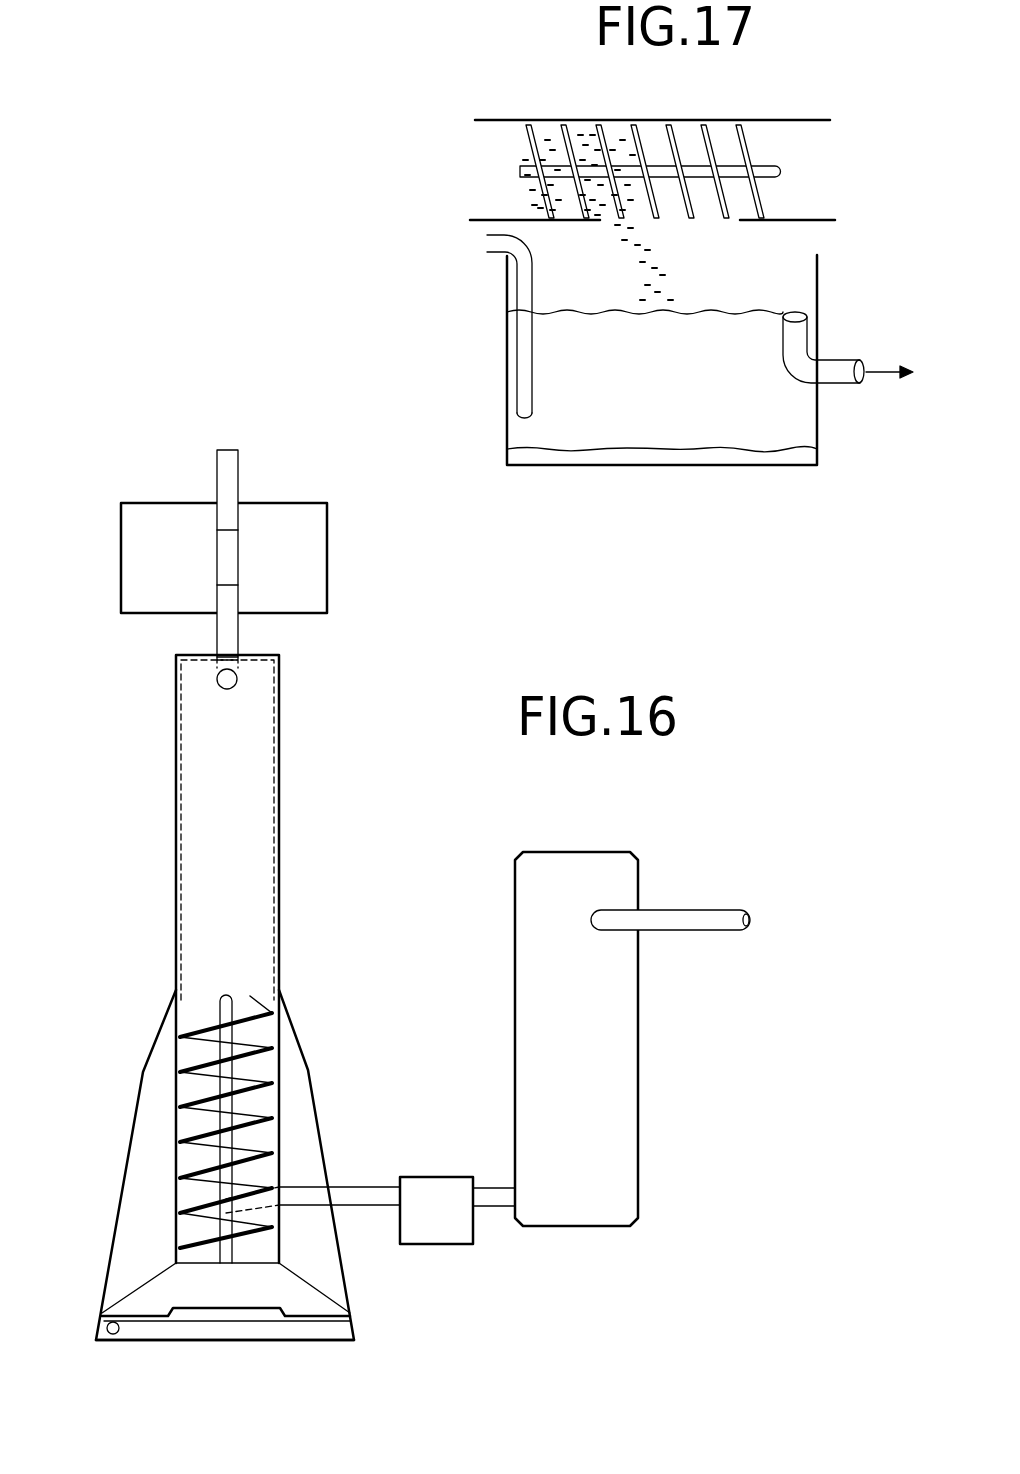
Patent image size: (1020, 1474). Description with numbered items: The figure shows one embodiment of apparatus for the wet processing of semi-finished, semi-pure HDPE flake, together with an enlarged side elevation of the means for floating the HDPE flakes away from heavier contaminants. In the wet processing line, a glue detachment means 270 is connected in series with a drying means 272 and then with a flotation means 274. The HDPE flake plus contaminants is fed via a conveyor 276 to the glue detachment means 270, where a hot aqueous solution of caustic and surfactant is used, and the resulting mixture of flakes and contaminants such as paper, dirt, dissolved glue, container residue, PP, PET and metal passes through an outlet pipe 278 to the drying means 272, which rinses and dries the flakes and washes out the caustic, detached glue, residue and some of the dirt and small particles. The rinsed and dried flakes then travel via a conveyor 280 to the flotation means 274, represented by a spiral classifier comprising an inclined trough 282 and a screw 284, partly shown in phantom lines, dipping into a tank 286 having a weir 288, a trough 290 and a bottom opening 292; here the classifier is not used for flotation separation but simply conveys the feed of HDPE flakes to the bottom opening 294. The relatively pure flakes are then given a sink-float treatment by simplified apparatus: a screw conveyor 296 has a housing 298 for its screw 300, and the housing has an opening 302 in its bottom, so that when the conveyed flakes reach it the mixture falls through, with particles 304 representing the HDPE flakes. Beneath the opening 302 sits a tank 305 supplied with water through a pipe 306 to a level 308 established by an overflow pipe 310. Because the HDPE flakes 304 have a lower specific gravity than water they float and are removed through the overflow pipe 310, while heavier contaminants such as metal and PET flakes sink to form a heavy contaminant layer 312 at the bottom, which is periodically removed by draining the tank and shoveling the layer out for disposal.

In FIG. 16, the glue detachment means 270 is at (640, 1088).
In FIG. 16, the drying means 272 is at (432, 1245).
In FIG. 16, the flotation means 274 is at (340, 750).
In FIG. 16, the conveyor 276 is at (670, 910).
In FIG. 16, the outlet pipe 278 is at (497, 1183).
In FIG. 16, the conveyor 280 is at (352, 1185).
In FIG. 16, the inclined trough 282 is at (280, 870).
In FIG. 16, the screw 284 is at (255, 1015).
In FIG. 16, the tank 286 is at (355, 1288).
In FIG. 16, the weir 288 is at (197, 1322).
In FIG. 16, the trough 290 is at (258, 1341).
In FIG. 16, the bottom opening 292 is at (117, 1340).
In FIG. 16, the bottom opening 294 is at (240, 668).
In FIG. 17, the screw conveyor 296 is at (661, 160).
In FIG. 16, the screw conveyor 296 is at (215, 632).
In FIG. 17, the housing 298 is at (505, 120).
In FIG. 17, the screw 300 is at (752, 152).
In FIG. 17, the opening 302 is at (708, 222).
In FIG. 16, the opening 302 is at (228, 556).
In FIG. 17, the particles 304 is at (665, 278).
In FIG. 17, the tank 305 is at (818, 410).
In FIG. 17, the pipe 306 is at (518, 360).
In FIG. 17, the level 308 is at (610, 312).
In FIG. 17, the overflow pipe 310 is at (800, 310).
In FIG. 17, the heavy contaminant layer 312 is at (803, 455).